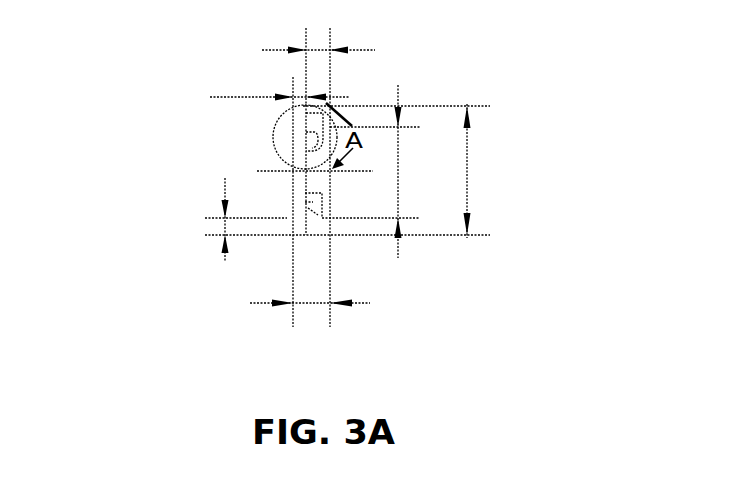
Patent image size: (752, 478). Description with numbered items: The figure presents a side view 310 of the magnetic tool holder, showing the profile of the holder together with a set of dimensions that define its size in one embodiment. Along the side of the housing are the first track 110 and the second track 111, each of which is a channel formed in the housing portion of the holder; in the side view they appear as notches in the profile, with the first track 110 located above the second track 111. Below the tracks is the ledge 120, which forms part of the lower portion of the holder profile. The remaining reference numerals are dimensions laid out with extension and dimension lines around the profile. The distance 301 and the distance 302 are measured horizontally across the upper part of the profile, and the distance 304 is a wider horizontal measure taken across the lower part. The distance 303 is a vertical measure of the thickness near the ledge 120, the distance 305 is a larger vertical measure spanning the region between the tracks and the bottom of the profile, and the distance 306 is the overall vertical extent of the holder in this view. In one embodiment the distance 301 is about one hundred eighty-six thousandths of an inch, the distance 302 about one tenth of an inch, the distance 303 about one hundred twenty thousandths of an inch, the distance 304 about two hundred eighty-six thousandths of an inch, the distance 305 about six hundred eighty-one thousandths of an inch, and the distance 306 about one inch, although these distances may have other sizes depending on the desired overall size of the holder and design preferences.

The first track 110 is at (303, 139).
The second track 111 is at (305, 201).
The ledge 120 is at (293, 233).
The distance 301 is at (292, 59).
The distance 302 is at (250, 99).
The distance 303 is at (225, 263).
The distance 304 is at (340, 307).
The distance 305 is at (413, 171).
The distance 306 is at (475, 171).
The side view 310 is at (402, 176).